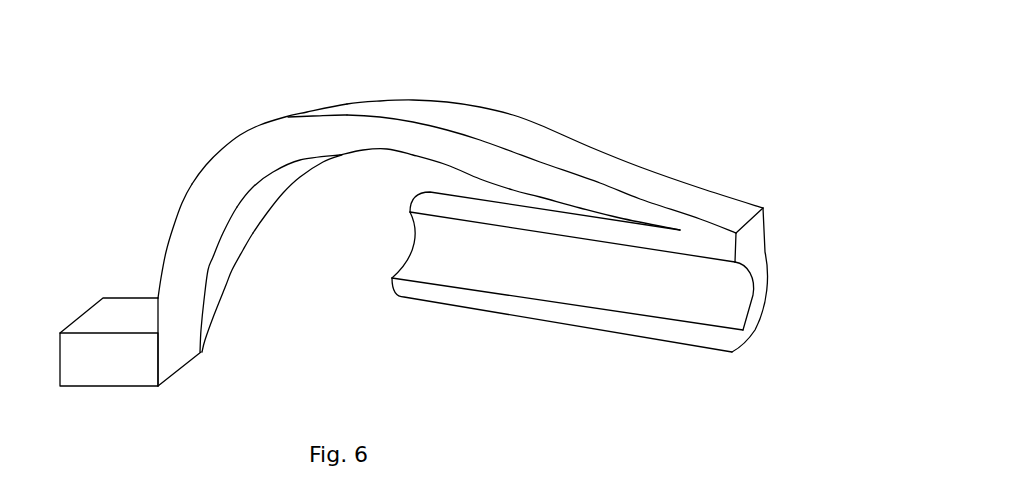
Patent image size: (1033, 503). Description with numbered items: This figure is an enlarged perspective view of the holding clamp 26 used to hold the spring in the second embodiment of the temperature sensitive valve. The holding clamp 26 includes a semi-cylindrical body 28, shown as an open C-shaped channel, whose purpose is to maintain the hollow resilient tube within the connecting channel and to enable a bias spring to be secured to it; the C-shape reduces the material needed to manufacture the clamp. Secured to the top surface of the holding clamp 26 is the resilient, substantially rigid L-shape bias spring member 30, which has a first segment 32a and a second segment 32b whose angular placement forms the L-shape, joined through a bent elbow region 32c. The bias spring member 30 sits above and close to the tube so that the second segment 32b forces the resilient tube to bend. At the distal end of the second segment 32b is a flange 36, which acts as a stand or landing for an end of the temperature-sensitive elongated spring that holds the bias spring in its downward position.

The holding clamp 26 is at (617, 72).
The semi-cylindrical body 28 is at (627, 285).
The L-shape bias spring member 30 is at (597, 155).
The first segment 32a is at (540, 128).
The second segment 32b is at (188, 245).
The bent elbow region 32c is at (272, 150).
The flange 36 is at (105, 367).